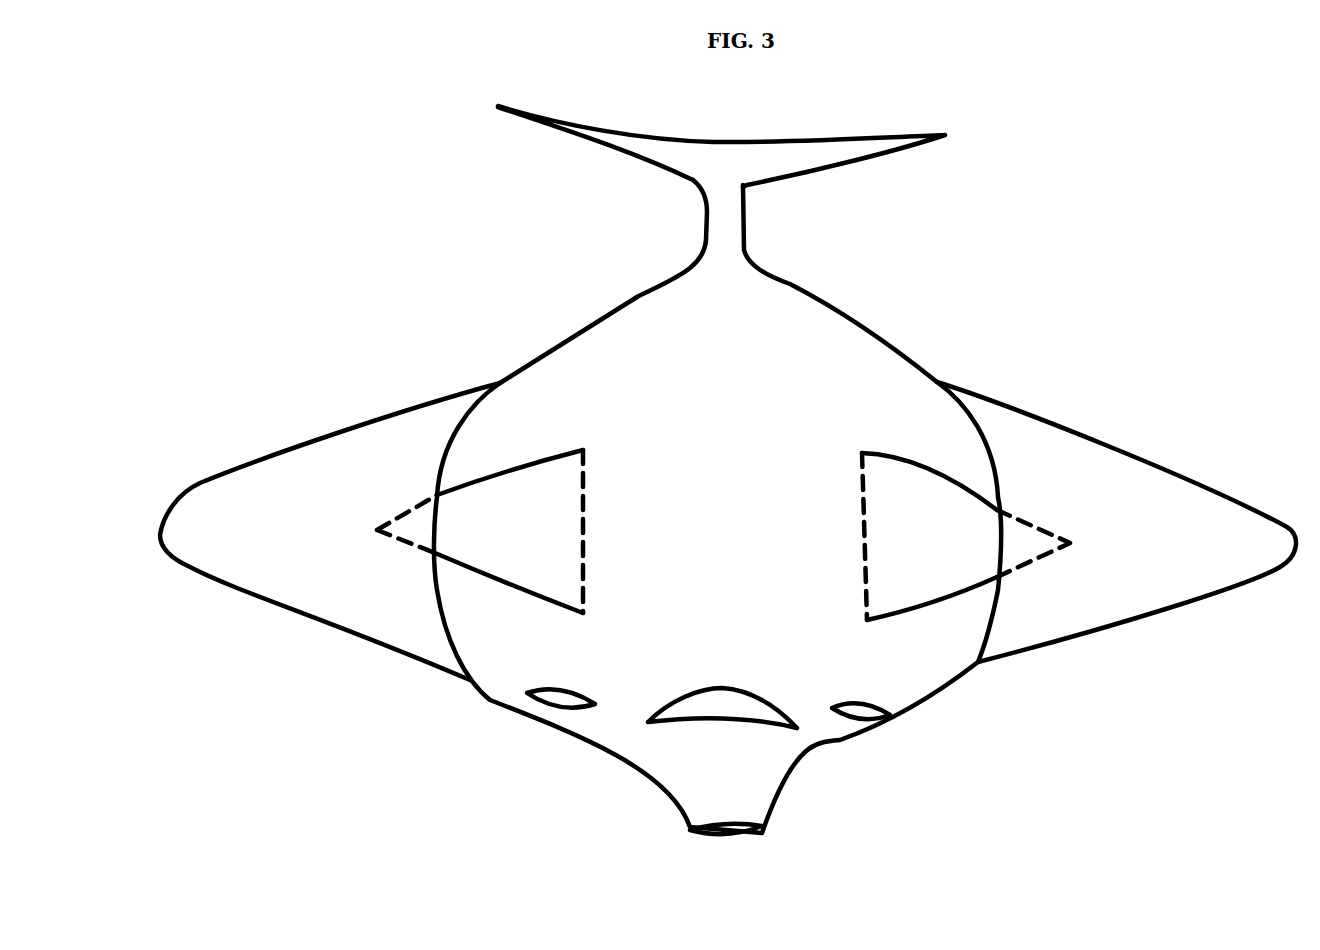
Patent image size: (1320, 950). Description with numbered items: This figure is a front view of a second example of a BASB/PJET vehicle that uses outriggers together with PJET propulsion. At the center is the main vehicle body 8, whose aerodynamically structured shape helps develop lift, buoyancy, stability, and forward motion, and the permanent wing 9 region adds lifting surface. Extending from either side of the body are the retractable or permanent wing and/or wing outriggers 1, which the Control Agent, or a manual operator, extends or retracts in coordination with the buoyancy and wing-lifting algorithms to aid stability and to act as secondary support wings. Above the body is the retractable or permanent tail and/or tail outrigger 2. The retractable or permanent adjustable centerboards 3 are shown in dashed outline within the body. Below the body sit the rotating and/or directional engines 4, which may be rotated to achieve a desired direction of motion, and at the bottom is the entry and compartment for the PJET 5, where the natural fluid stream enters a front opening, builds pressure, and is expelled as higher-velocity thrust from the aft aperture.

The retractable or permanent wing and/or wing outrigger 1 is at (318, 496).
The retractable or permanent tail and/or tail outrigger 2 is at (742, 160).
The retractable or permanent adjustable centerboard 3 is at (525, 492).
The rotating and/or directional engines 4 is at (553, 700).
The entry and compartment for PJET 5 is at (718, 834).
The main vehicle body 8 is at (698, 702).
The permanent wing 9 is at (621, 355).